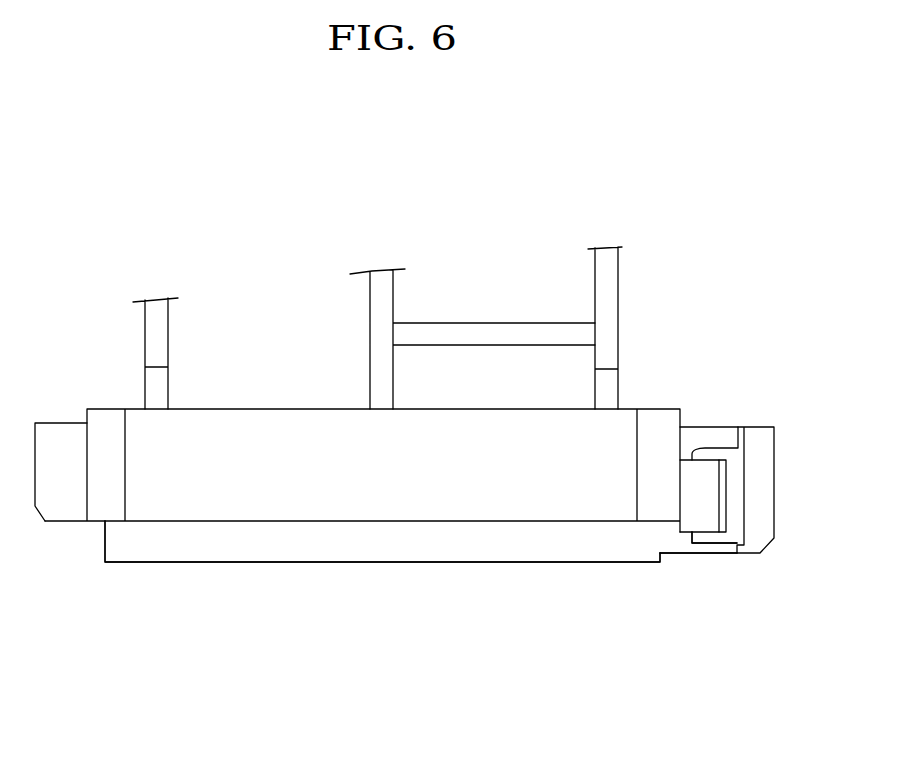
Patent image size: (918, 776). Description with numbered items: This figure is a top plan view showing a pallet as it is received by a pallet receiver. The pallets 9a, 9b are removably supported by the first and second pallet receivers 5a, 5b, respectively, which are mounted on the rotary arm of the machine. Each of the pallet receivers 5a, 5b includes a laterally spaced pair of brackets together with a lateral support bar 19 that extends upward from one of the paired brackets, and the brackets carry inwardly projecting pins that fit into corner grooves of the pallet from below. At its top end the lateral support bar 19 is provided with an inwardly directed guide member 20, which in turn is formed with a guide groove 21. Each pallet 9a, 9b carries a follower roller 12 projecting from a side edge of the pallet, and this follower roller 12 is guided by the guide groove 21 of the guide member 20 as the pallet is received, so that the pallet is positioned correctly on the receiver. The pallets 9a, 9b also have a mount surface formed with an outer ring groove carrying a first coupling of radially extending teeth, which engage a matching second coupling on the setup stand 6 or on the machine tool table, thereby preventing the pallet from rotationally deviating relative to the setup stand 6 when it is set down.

The setup stand 6 is at (620, 270).
The pallet 9a is at (423, 562).
The pallet 9b is at (382, 577).
The follower roller 12 is at (710, 475).
The lateral support bar 19 is at (760, 426).
The guide member 20 is at (716, 447).
The guide groove 21 is at (727, 497).
The first pallet receiver 5a is at (732, 573).
The second pallet receiver 5b is at (721, 607).